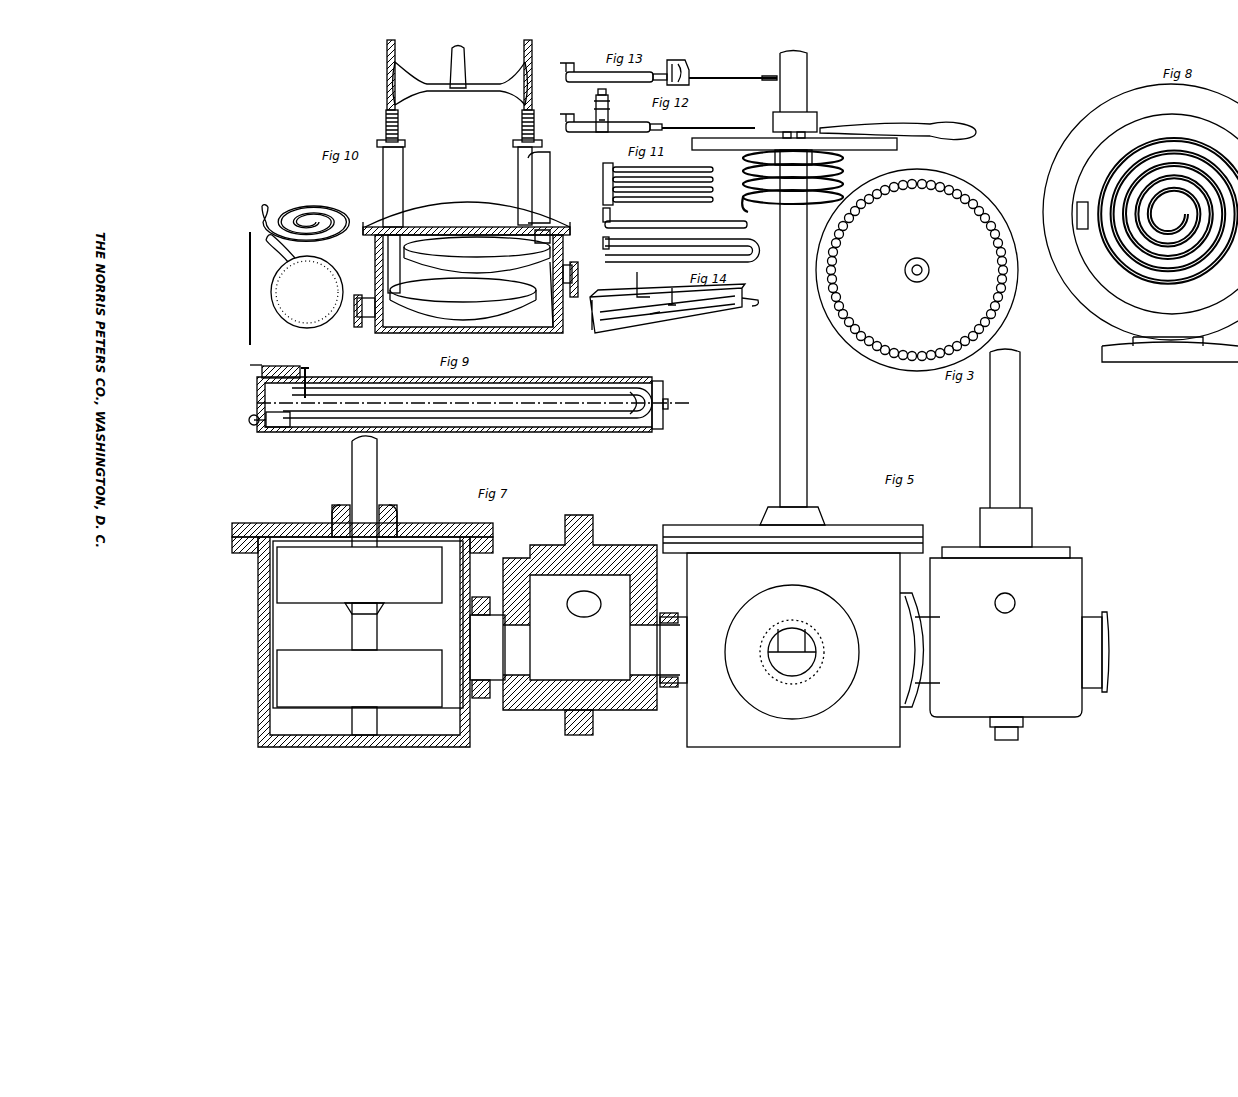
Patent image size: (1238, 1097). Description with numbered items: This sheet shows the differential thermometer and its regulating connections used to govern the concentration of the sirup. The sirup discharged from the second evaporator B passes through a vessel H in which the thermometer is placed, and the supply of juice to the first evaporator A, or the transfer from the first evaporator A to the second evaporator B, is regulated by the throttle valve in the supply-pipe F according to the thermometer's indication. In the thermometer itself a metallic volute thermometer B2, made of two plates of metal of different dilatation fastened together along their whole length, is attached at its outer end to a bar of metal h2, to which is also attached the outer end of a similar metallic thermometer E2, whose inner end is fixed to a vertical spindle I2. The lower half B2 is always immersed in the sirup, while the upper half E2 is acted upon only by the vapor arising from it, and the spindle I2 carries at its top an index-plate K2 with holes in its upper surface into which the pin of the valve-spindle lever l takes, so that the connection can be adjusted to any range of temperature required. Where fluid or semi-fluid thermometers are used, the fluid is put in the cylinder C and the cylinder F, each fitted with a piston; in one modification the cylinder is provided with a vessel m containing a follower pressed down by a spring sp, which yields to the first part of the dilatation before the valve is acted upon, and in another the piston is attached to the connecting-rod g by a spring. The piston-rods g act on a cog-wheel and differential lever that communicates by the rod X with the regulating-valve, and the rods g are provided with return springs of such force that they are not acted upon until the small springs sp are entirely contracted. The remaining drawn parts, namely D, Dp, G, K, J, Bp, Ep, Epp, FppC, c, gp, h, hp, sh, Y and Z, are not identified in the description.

In FIG. 10, the first evaporator A is at (466, 267).
In FIG. 11, the first evaporator A is at (681, 247).
In FIG. 8, the first evaporator A is at (1140, 212).
In FIG. 9, the first evaporator A is at (473, 404).
In FIG. 7, the first evaporator A is at (368, 635).
In FIG. 5, the first evaporator A is at (800, 636).
In FIG. 10, the second evaporator B is at (463, 301).
In FIG. 10, the spherical vessel B' Bp is at (304, 281).
In FIG. 7, the metallic volute thermometer B2 is at (359, 692).
In FIG. 10, the cylinder C is at (391, 216).
In FIG. 13, the cylinder C is at (606, 70).
In FIG. 10, the rod D is at (380, 76).
In FIG. 14, the rod D is at (667, 308).
In FIG. 10, the screw D' Dp is at (399, 126).
In FIG. 10, the upper disc E' Ep is at (478, 282).
In FIG. 14, the upper disc E' Ep is at (679, 304).
In FIG. 10, the spiral coil E'' Epp is at (305, 216).
In FIG. 8, the spiral coil E'' Epp is at (1168, 211).
In FIG. 7, the metallic thermometer E2 is at (359, 575).
In FIG. 10, the cylinder F is at (531, 191).
In FIG. 12, the cylinder F is at (607, 121).
In FIG. 11, the tube F''C FppC is at (675, 218).
In FIG. 10, the rod / tube G is at (534, 75).
In FIG. 9, the rod / tube G is at (467, 400).
In FIG. 10, the vessel H is at (460, 76).
In FIG. 3, the vertical spindle I2 is at (798, 108).
In FIG. 7, the vertical spindle I2 is at (364, 491).
In FIG. 5, the vertical spindle I2 is at (792, 337).
In FIG. 10, the bracket J is at (254, 288).
In FIG. 10, the screw K is at (534, 126).
In FIG. 3, the index-plate K2 is at (855, 248).
In FIG. 14, the rod X is at (643, 278).
In FIG. 5, the rod X is at (1019, 624).
In FIG. 7, the valve stem Y is at (591, 613).
In FIG. 5, the valve stem Y is at (1005, 428).
In FIG. 5, the opening Z is at (1010, 602).
In FIG. 11, the fitting c is at (604, 184).
In FIG. 9, the fitting c is at (279, 395).
In FIG. 13, the piston-rod g is at (733, 70).
In FIG. 12, the piston-rod g is at (702, 122).
In FIG. 13, the clamp g' gp is at (679, 78).
In FIG. 14, the tube h is at (655, 308).
In FIG. 9, the tube h is at (360, 416).
In FIG. 8, the tab h' hp is at (1077, 216).
In FIG. 7, the bar of metal h2 is at (364, 626).
In FIG. 3, the lever l is at (898, 125).
In FIG. 13, the vessel m is at (660, 70).
In FIG. 12, the spring sp is at (608, 110).
In FIG. 11, the tubes sh is at (673, 184).